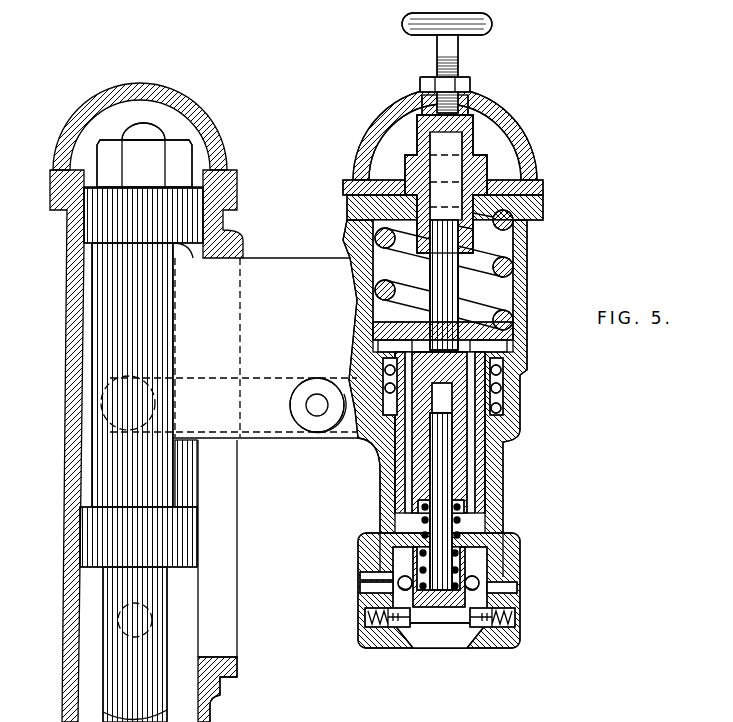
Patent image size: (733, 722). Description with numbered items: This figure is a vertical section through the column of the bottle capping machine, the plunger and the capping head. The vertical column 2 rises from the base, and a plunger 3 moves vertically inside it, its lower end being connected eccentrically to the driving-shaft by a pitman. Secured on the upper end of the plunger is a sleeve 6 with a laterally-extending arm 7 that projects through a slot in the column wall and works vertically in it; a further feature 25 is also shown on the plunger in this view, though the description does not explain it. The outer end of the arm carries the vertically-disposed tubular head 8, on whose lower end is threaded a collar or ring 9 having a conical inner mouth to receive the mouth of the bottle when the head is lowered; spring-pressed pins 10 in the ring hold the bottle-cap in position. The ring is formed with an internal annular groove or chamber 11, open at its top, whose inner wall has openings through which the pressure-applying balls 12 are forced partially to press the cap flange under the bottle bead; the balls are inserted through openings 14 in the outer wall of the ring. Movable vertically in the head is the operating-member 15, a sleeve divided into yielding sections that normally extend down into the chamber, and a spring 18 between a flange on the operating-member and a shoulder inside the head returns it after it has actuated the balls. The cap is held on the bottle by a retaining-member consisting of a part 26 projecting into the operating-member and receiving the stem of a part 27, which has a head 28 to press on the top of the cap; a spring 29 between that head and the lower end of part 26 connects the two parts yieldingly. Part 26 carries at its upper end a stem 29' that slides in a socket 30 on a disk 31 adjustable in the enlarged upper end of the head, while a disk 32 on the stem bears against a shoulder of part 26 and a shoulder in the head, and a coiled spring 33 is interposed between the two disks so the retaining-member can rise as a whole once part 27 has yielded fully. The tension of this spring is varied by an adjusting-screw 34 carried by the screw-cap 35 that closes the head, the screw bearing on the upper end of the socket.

The vertical column 2 is at (62, 632).
The plunger 3 is at (160, 697).
The sleeve 6 is at (187, 545).
The laterally-extending arm 7 is at (275, 410).
The tubular head 8 is at (503, 463).
The collar or ring 9 is at (518, 553).
The spring-pressed pins 10 is at (412, 623).
The internal annular groove or chamber 11 is at (390, 573).
The pressure-applying balls 12 is at (393, 585).
The openings 14 is at (512, 588).
The operating-member 15 is at (398, 492).
The spring 18 is at (503, 393).
The cross pin hole 25 is at (147, 620).
The retaining-member part 26 is at (460, 425).
The retaining-member part 27 is at (440, 527).
The head 28 is at (447, 597).
The spring 29 is at (395, 546).
The stem 29' is at (465, 301).
The socket 30 is at (455, 213).
The disk 31 is at (542, 190).
The disk 32 is at (517, 343).
The coiled spring 33 is at (513, 263).
The adjusting-screw 34 is at (457, 62).
The screw-cap 35 is at (513, 123).